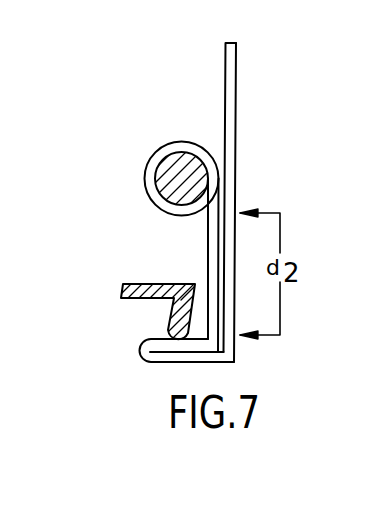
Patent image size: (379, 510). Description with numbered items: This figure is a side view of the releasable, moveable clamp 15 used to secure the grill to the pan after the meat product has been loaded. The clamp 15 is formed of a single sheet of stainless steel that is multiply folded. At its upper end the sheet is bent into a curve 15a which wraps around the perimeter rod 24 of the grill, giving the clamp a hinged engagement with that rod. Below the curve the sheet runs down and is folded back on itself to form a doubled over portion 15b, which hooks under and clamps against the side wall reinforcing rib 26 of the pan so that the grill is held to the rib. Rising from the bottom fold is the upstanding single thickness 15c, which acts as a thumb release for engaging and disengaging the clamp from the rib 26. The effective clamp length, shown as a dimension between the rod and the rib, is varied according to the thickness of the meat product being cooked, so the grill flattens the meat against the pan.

The moveable clamp 15 is at (187, 213).
The curve 15a is at (149, 193).
The doubled over portion 15b is at (143, 356).
The upstanding single thickness 15c is at (235, 63).
The perimeter rod 24 is at (204, 170).
The reinforcing rib 26 is at (121, 291).